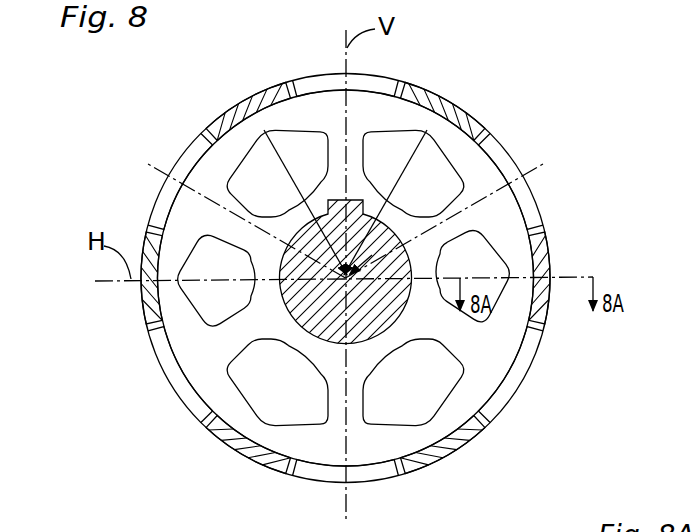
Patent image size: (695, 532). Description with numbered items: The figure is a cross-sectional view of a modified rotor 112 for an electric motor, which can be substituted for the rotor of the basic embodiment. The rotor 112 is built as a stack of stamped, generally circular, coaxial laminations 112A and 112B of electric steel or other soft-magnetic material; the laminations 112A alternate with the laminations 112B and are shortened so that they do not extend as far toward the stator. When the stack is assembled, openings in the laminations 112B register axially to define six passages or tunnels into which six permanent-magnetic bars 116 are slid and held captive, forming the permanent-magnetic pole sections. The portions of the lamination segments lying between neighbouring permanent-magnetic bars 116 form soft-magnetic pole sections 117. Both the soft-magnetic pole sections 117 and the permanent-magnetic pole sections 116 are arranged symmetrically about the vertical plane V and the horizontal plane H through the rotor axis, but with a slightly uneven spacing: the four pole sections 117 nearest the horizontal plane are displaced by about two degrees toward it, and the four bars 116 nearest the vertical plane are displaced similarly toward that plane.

The rotor 112 is at (561, 346).
The lamination 112A is at (180, 371).
The lamination 112B is at (207, 417).
The permanent-magnetic bar 116 is at (457, 102).
The soft-magnetic pole section 117 is at (342, 271).